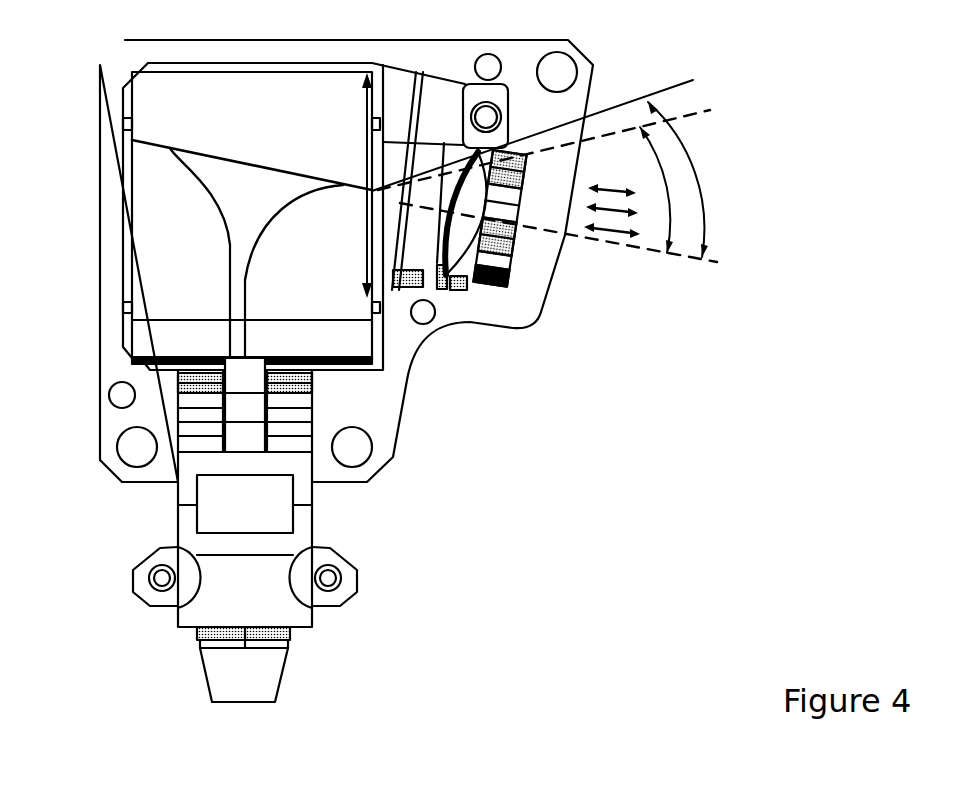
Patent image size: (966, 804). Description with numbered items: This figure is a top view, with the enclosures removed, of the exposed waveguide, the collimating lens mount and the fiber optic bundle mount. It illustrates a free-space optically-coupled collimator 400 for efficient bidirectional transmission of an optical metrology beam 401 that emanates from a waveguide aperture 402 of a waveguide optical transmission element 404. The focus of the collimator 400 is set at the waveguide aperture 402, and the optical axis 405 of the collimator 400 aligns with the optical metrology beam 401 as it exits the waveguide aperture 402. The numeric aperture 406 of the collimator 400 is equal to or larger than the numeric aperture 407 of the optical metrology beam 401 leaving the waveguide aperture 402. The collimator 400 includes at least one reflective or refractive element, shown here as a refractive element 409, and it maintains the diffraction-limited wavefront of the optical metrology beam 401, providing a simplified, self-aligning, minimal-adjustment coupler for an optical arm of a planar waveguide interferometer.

The free-space optically-coupled collimator 400 is at (465, 305).
The optical metrology beam 401 is at (617, 180).
The waveguide aperture 402 is at (360, 182).
The waveguide optical transmission element 404 is at (266, 222).
The optical axis 405 is at (643, 253).
The numeric aperture 406 is at (706, 194).
The numeric aperture 407 is at (668, 184).
The refractive element 409 is at (450, 295).